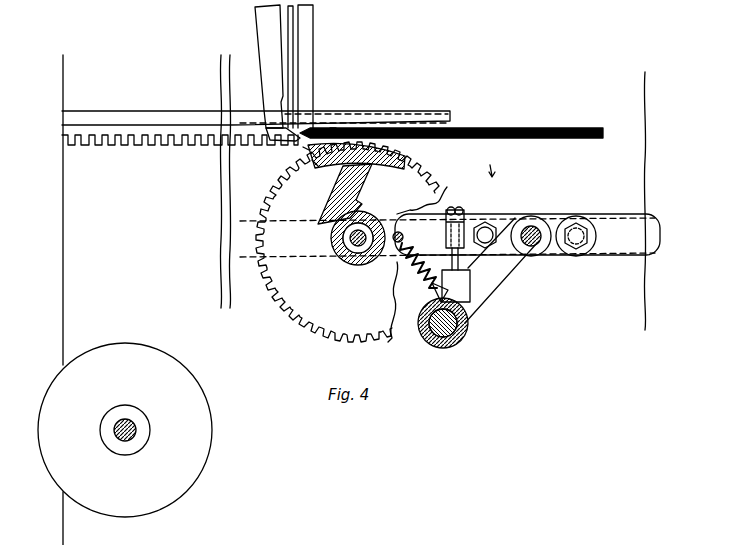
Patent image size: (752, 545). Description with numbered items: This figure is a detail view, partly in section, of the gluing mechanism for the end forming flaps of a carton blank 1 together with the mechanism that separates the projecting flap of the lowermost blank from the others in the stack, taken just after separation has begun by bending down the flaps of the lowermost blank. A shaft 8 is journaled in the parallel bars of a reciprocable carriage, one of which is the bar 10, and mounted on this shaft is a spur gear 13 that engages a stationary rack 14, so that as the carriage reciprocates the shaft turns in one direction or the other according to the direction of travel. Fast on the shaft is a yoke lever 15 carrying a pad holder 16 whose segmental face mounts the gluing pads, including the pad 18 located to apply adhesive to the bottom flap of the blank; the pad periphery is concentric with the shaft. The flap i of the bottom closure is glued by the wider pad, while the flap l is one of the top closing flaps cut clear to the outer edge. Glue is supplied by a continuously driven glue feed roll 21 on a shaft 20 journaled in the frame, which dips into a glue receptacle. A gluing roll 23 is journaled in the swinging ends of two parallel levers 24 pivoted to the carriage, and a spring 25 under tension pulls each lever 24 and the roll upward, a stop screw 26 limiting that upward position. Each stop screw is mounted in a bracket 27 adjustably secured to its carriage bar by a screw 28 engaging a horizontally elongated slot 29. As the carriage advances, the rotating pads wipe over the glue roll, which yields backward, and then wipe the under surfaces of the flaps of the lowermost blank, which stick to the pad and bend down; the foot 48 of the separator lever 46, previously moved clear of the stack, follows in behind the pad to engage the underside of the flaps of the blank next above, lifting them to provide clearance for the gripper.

The blank 1 is at (512, 127).
The shaft 8 is at (345, 263).
The bar 10 is at (630, 222).
The spur gear 13 is at (438, 182).
The stationary rack 14 is at (163, 142).
The yoke lever 15 is at (366, 206).
The pad holder 16 is at (362, 172).
The segmental gluing pad 18 is at (312, 160).
The shaft 20 is at (126, 418).
The glue feed roll 21 is at (108, 352).
The gluing roll 23 is at (467, 332).
The lever 24 is at (496, 288).
The spring 25 is at (420, 267).
The stop screw 26 is at (466, 272).
The bracket 27 is at (566, 214).
The screw 28 is at (482, 220).
The horizontally elongated slot 29 is at (508, 224).
The lever 46 is at (262, 25).
The foot 48 is at (270, 131).
The end flap i is at (333, 129).
The end flap l is at (305, 148).